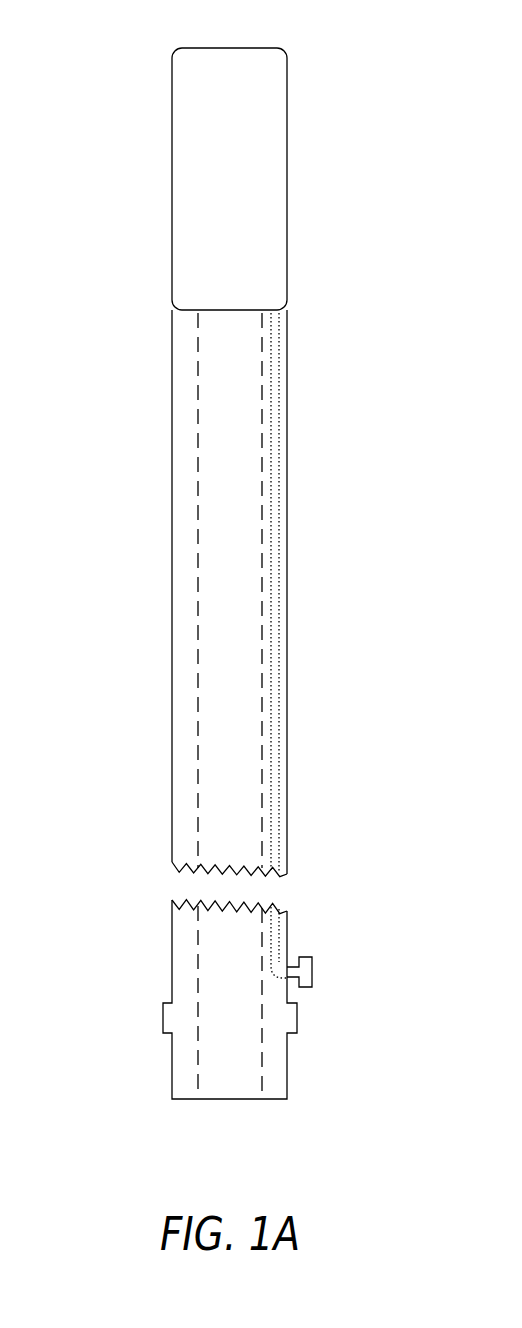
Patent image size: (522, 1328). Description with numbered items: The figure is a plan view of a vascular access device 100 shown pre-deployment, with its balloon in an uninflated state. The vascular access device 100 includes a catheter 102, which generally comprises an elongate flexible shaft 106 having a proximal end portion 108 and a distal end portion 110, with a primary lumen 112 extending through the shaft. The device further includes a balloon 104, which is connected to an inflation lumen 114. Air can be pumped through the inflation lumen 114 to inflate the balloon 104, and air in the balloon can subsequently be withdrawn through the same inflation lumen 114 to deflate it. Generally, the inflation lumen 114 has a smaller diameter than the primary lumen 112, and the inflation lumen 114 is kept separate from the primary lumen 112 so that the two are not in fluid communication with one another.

The vascular access device 100 is at (117, 46).
The catheter 102 is at (292, 546).
The balloon 104 is at (258, 170).
The elongate flexible shaft 106 is at (172, 450).
The proximal end portion 108 is at (146, 958).
The distal end portion 110 is at (315, 254).
The primary lumen 112 is at (222, 648).
The inflation lumen 114 is at (282, 708).